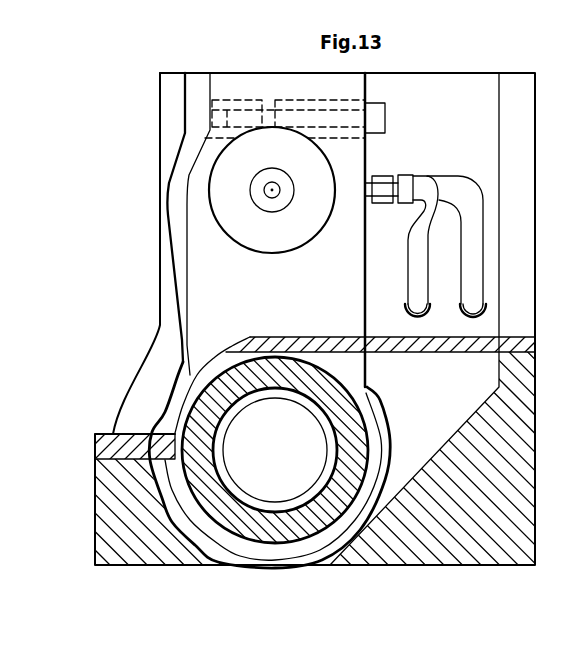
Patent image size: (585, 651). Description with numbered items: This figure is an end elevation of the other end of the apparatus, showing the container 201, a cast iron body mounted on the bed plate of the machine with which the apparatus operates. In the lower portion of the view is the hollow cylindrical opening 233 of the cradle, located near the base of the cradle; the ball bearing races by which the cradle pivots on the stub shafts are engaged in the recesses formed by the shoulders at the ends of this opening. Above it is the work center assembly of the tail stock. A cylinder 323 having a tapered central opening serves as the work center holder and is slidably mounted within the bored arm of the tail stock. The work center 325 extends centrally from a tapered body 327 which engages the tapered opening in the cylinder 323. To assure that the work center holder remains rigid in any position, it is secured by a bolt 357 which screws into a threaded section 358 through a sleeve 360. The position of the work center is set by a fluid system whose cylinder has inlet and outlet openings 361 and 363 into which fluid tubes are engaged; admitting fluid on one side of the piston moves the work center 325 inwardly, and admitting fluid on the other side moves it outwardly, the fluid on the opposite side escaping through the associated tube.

The container 201 is at (522, 112).
The hollow cylindrical opening 233 is at (329, 403).
The cylinder 323 is at (230, 236).
The work center 325 is at (274, 183).
The tapered body 327 is at (288, 206).
The bolt 357 is at (386, 119).
The threaded section 358 is at (259, 107).
The sleeve 360 is at (338, 104).
The inlet and outlet opening 361 is at (471, 313).
The inlet and outlet opening 363 is at (406, 310).